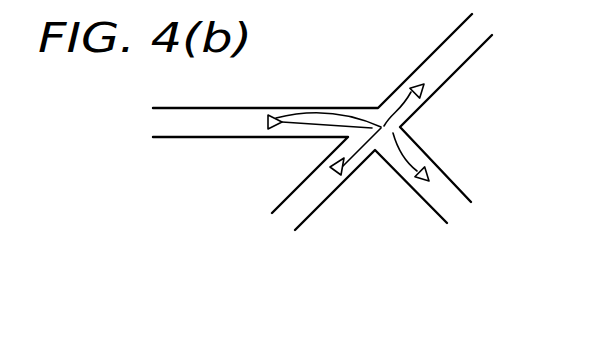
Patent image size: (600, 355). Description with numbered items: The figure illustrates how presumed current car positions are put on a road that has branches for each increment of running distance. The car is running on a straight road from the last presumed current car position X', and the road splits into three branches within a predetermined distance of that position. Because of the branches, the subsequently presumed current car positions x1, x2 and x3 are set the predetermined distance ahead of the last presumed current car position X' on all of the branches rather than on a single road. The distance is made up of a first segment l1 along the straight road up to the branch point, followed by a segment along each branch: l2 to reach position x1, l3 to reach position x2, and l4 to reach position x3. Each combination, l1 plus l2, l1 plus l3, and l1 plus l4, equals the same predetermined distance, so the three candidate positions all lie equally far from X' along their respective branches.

The last presumed current car position X' is at (255, 148).
The distance segment along the road before the branch point l1 is at (325, 114).
The distance segment along the first branch l2 is at (395, 110).
The distance segment along the second branch l3 is at (410, 142).
The distance segment along the third branch l4 is at (367, 157).
The subsequently presumed current car position on first branch x1 is at (418, 85).
The subsequently presumed current car position on second branch x2 is at (435, 173).
The subsequently presumed current car position on third branch x3 is at (338, 180).